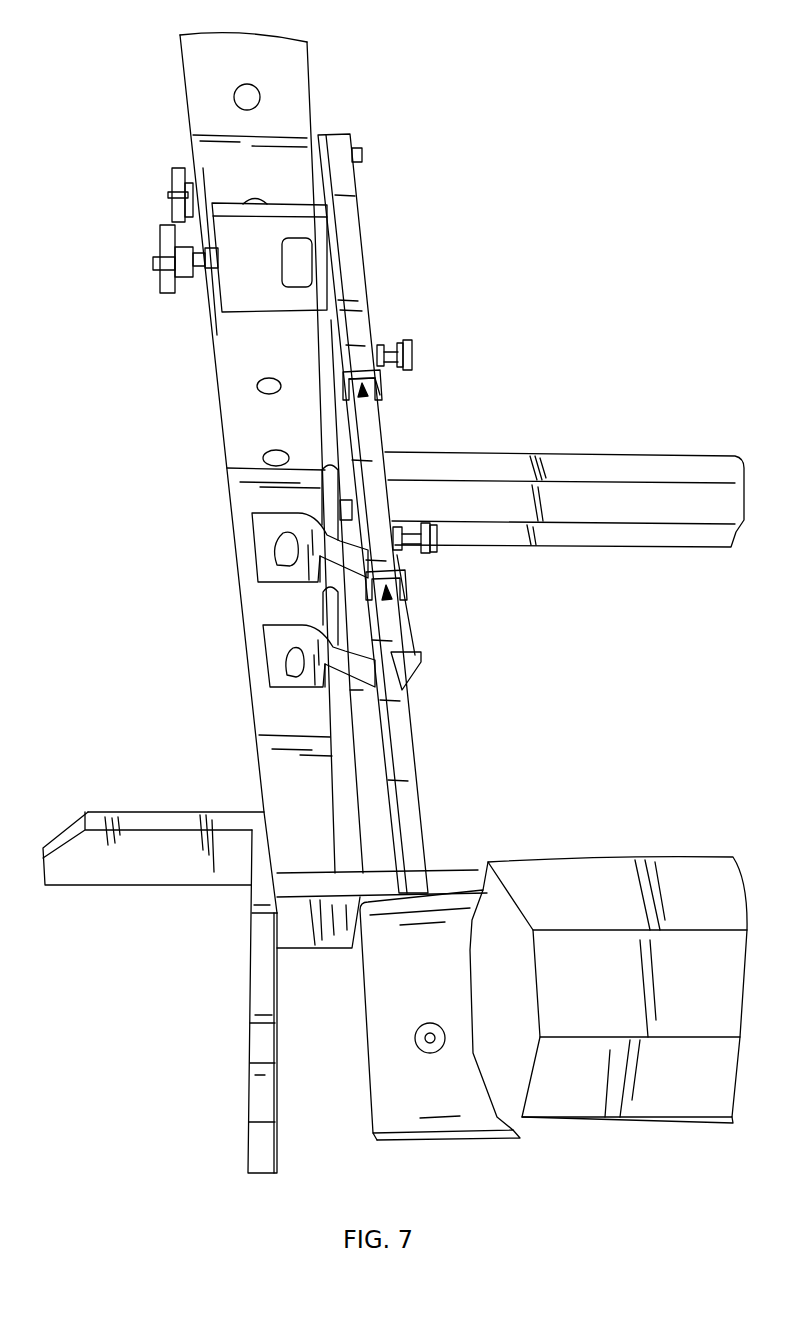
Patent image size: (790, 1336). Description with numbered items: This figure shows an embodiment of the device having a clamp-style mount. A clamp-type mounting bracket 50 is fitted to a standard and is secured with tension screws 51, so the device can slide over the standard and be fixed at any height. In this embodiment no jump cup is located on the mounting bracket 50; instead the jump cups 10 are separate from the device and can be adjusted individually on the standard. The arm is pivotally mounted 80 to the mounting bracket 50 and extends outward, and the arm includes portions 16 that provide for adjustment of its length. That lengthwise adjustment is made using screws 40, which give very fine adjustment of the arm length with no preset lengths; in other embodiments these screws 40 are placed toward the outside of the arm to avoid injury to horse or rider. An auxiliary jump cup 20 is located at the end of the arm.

The jump cup 10 is at (242, 543).
The portions of the arm 16 is at (367, 395).
The auxiliary jump cup 20 is at (388, 1105).
The screws 40 is at (414, 352).
The mounting bracket 50 is at (266, 270).
The tension screws 51 is at (153, 262).
The pivotal mounting 80 is at (368, 155).